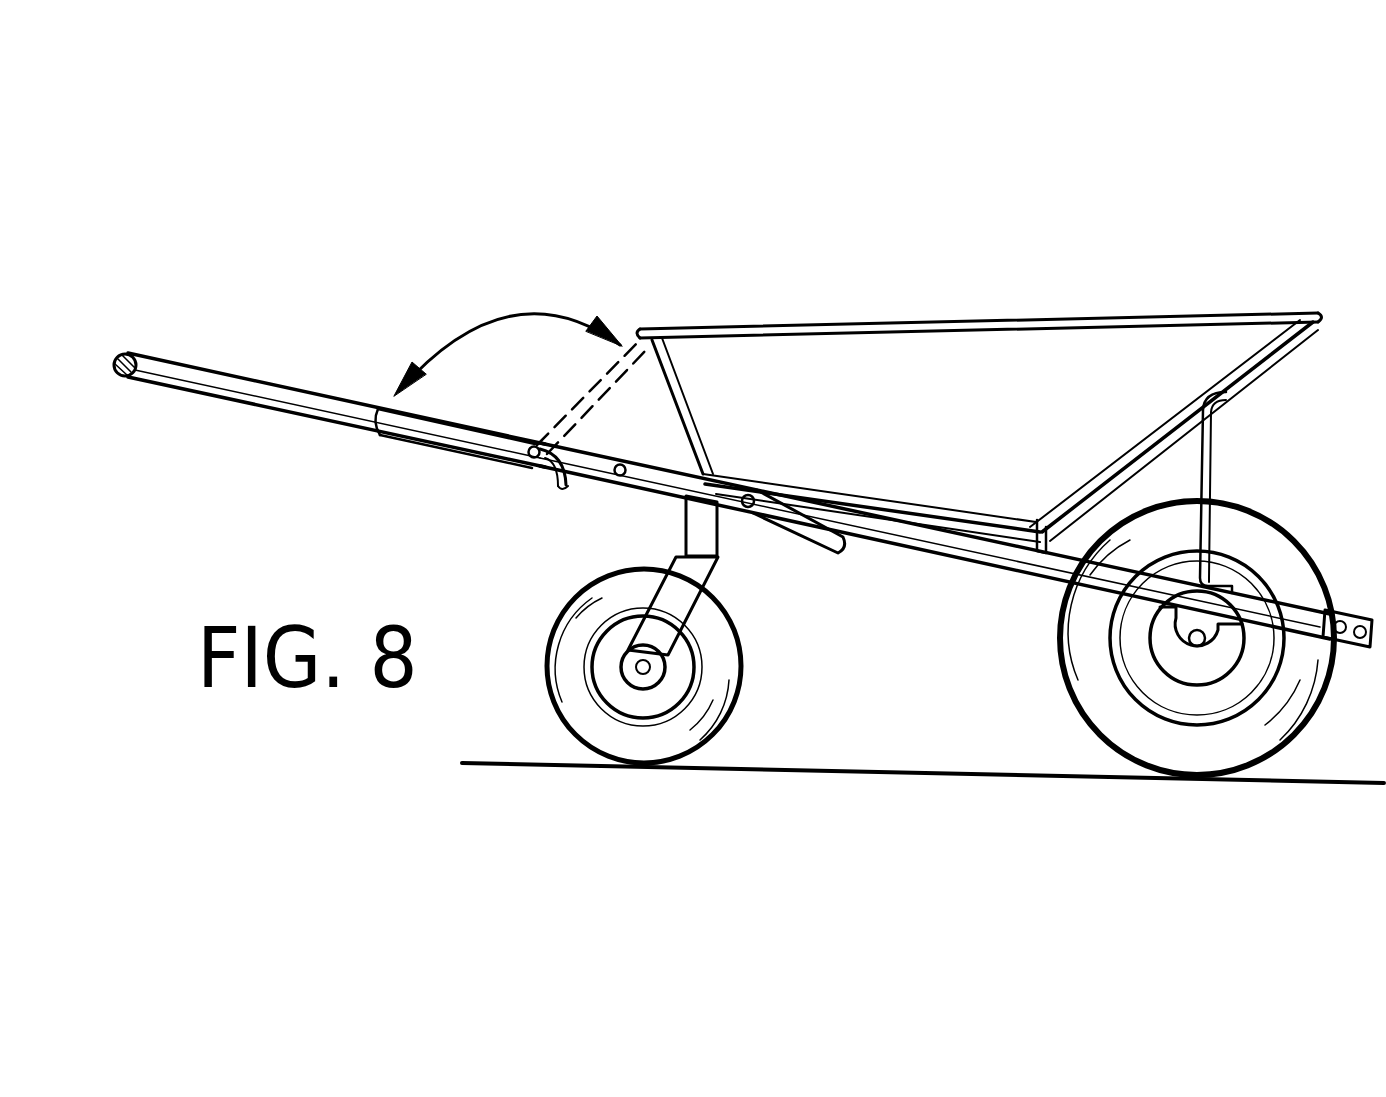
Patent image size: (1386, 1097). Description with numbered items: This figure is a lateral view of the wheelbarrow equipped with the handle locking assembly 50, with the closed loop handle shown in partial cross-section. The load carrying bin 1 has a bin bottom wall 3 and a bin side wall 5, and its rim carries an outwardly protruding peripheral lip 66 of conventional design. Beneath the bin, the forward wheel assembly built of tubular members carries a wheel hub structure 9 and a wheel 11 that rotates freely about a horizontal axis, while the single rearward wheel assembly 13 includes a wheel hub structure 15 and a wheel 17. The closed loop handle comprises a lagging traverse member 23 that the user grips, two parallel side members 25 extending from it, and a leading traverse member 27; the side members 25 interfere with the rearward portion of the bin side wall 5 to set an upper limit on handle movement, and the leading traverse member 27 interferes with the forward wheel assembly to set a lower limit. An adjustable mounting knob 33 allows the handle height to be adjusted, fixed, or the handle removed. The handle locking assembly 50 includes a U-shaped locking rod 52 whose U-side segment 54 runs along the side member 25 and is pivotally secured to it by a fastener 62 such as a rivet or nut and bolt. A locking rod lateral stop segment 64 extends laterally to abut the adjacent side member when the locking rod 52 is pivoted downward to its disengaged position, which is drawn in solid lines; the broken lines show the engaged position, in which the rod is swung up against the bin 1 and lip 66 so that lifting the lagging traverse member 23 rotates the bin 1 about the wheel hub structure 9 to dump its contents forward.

The load carrying bin 1 is at (953, 443).
The bin bottom wall 3 is at (963, 537).
The bin side wall 5 is at (902, 345).
The wheel hub structure 9 is at (1140, 638).
The wheel 11 is at (1278, 535).
The rearward wheel assembly 13 is at (770, 650).
The wheel hub structure 15 is at (607, 676).
The wheel 17 is at (735, 690).
The lagging traverse member 23 is at (130, 352).
The parallel side members 25 is at (242, 408).
The leading traverse member 27 is at (838, 556).
The adjustable mounting knobs 33 is at (622, 464).
The handle locking assembly 50 is at (437, 340).
The U-shaped locking rod 52 is at (370, 420).
The U-side segment 54 is at (593, 391).
The fastener 62 is at (526, 460).
The locking rod lateral stop segment 64 is at (567, 490).
The outwardly protruding peripheral lip 66 is at (715, 330).